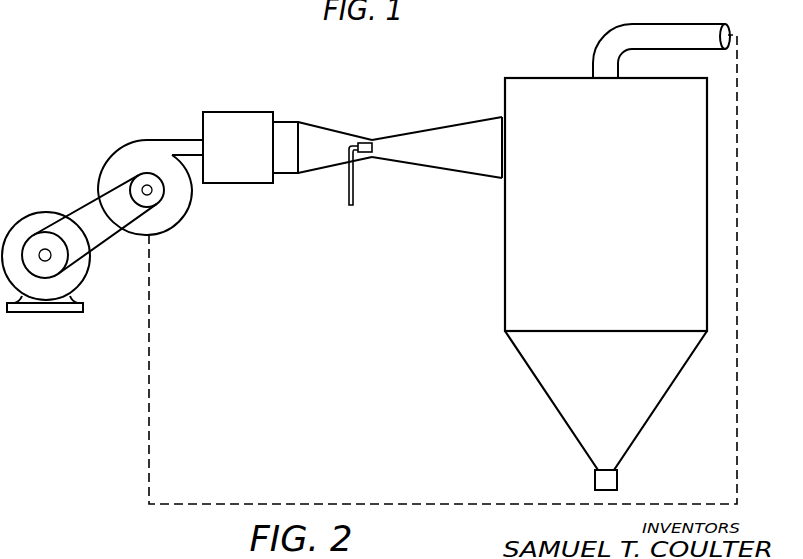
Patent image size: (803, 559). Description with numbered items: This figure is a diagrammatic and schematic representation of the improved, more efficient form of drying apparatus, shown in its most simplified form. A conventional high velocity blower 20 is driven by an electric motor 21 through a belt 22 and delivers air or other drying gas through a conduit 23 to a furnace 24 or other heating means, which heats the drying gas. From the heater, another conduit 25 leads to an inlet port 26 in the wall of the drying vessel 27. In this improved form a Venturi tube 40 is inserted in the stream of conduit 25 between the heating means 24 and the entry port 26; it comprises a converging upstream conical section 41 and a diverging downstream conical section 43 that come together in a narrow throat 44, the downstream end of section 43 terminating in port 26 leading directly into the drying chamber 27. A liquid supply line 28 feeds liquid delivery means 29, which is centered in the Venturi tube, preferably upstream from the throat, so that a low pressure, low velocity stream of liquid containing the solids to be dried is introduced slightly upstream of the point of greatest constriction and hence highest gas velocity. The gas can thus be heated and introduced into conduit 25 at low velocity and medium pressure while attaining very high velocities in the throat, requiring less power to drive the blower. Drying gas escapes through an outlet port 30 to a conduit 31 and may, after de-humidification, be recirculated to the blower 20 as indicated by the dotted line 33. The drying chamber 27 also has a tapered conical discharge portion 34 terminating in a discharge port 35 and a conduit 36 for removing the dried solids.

The high velocity blower 20 is at (117, 148).
The electric motor 21 is at (40, 212).
The belt 22 is at (95, 224).
The conduit 23 is at (177, 140).
The furnace 24 is at (245, 112).
The conduit 25 is at (287, 122).
The inlet port 26 is at (507, 147).
The drying vessel 27 is at (505, 282).
The liquid supply line 28 is at (347, 196).
The liquid delivery means 29 is at (367, 153).
The outlet port 30 is at (613, 79).
The conduit 31 is at (670, 25).
The dotted line 33 is at (737, 412).
The tapered conical discharge portion 34 is at (547, 397).
The discharge port 35 is at (603, 470).
The conduit 36 is at (595, 480).
The Venturi tube 40 is at (447, 126).
The converging upstream conical section 41 is at (335, 130).
The diverging downstream conical section 43 is at (457, 171).
The throat 44 is at (372, 140).